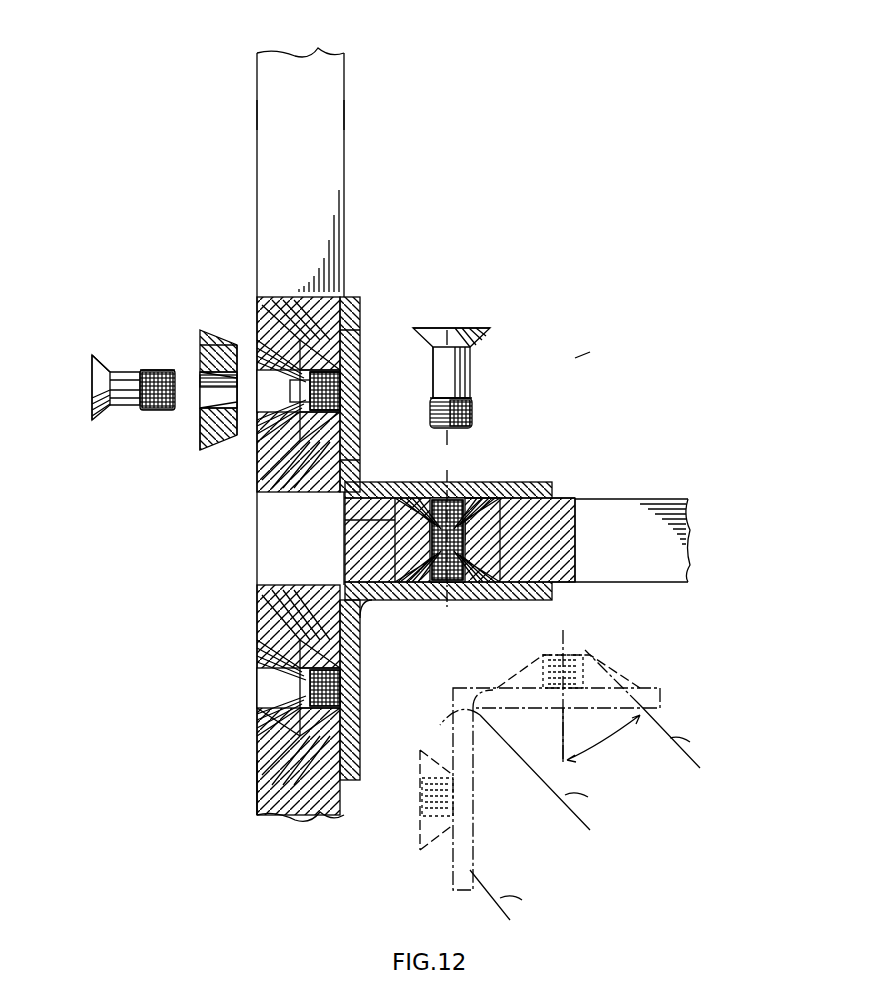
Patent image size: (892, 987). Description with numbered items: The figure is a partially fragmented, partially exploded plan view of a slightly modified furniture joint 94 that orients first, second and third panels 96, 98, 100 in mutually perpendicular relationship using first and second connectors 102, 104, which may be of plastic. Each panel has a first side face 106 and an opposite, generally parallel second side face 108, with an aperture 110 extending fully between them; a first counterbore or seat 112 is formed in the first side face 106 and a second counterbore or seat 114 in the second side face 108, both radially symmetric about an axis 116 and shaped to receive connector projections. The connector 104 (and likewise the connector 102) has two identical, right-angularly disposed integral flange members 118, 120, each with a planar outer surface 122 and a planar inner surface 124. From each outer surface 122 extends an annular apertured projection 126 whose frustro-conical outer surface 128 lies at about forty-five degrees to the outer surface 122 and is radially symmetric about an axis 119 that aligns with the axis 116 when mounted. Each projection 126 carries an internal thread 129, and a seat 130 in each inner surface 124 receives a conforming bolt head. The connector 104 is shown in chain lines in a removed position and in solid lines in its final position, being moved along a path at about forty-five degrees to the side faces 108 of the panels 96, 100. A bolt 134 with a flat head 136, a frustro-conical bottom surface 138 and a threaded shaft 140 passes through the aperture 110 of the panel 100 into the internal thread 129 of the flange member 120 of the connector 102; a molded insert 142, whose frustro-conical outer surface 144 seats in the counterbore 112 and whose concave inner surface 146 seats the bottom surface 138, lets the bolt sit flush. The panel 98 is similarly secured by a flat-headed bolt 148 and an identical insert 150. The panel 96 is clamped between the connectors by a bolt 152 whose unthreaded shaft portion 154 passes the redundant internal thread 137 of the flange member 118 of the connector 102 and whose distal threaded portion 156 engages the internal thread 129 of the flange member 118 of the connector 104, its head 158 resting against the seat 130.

The joint 94 is at (583, 350).
The first panel 96 is at (690, 528).
The second panel 98 is at (300, 825).
The third panel 100 is at (305, 60).
The first connector 102 is at (548, 490).
The second connector 104 is at (553, 593).
The first side face 106 is at (257, 96).
The second side face 108 is at (344, 105).
The aperture 110 is at (290, 405).
The first counterbore 112 is at (280, 470).
The second counterbore 114 is at (345, 345).
The axis 116 is at (440, 482).
The first flange member 118 is at (522, 485).
The axis 119 is at (562, 720).
The second flange member 120 is at (357, 297).
The outer surface 122 is at (510, 472).
The inner surface 124 is at (498, 688).
The annular apertured projection 126 is at (345, 418).
The frustro-conical outer surface 128 is at (578, 548).
The internal thread 129 is at (345, 395).
The seat 130 is at (470, 592).
The bolt 134 is at (121, 430).
The flat head 136 is at (92, 405).
The redundant internal thread 137 is at (370, 520).
The frustro-conical bottom surface 138 is at (105, 355).
The threaded shaft 140 is at (157, 370).
The insert 142 is at (208, 345).
The outer surface 144 is at (268, 332).
The inner surface 146 is at (203, 420).
The flat-headed bolt 148 is at (258, 702).
The insert 150 is at (258, 666).
The bolt 152 is at (488, 348).
The unthreaded shaft portion 154 is at (470, 375).
The distal threaded portion 156 is at (472, 410).
The head 158 is at (462, 328).